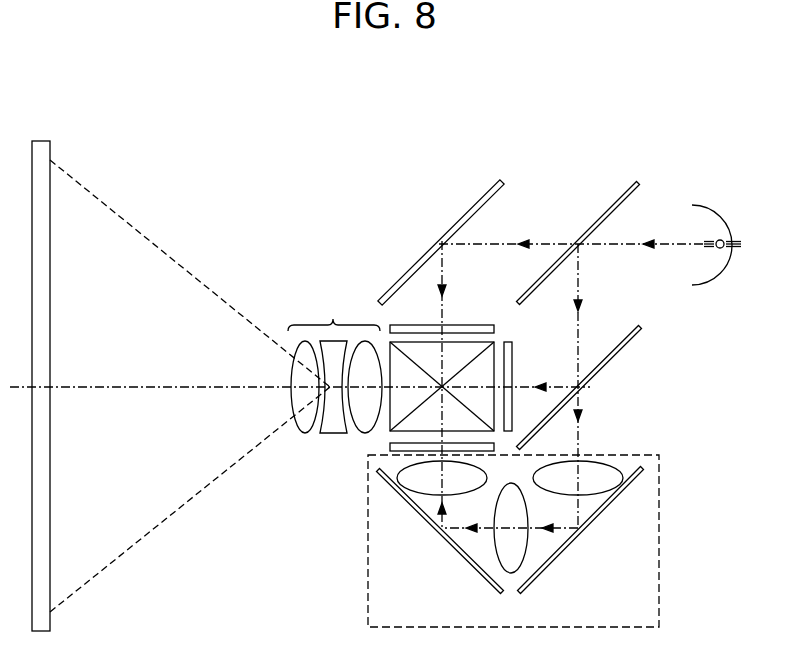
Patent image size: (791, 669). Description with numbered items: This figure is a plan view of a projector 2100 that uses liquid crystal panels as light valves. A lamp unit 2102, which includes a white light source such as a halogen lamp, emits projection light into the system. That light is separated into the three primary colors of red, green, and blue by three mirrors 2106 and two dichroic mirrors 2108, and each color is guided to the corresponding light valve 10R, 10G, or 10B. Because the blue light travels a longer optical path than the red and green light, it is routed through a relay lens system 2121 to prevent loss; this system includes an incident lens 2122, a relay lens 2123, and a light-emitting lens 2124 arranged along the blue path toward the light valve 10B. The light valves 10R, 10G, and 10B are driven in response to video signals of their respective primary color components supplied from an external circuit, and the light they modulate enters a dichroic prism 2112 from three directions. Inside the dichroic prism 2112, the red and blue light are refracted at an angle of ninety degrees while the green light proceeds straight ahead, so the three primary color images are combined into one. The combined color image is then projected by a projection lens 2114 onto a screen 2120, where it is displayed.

The projector 2100 is at (585, 120).
The lamp unit 2102 is at (720, 240).
The mirror 2106 is at (474, 210).
The dichroic mirror 2108 is at (612, 207).
The dichroic prism 2112 is at (402, 342).
The projection lens 2114 is at (335, 364).
The screen 2120 is at (50, 621).
The relay lens system 2121 is at (660, 497).
The incident lens 2122 is at (600, 487).
The relay lens 2123 is at (522, 558).
The light-emitting lens 2124 is at (420, 487).
The red light valve 10R is at (420, 325).
The green light valve 10G is at (538, 335).
The blue light valve 10B is at (390, 447).